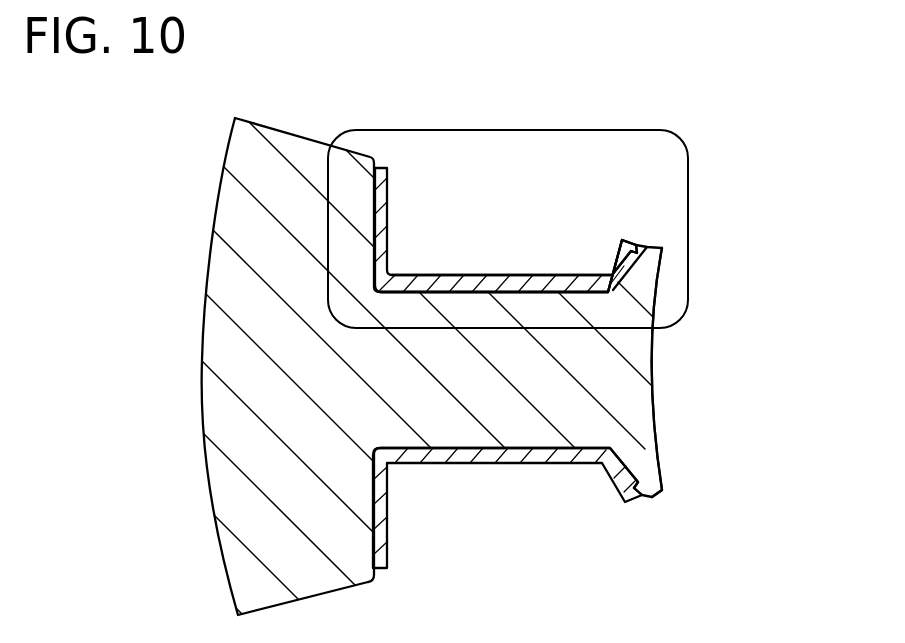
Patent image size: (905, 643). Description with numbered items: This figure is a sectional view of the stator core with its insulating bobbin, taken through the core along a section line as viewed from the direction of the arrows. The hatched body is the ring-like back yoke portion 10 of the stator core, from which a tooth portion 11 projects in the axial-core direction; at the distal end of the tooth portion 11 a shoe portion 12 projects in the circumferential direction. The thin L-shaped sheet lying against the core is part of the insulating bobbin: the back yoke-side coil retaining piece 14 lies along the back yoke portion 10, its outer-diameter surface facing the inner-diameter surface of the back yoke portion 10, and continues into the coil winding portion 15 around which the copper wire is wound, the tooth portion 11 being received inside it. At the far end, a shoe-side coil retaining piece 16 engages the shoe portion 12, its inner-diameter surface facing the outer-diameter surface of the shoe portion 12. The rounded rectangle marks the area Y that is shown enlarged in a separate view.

The back yoke portion 10 is at (242, 553).
The tooth portion 11 is at (513, 413).
The shoe portion 12 is at (634, 450).
The back yoke-side coil retaining piece 14 is at (381, 216).
The coil winding portion 15 is at (507, 283).
The shoe-side coil retaining piece 16 is at (630, 243).
The area Y is at (690, 163).